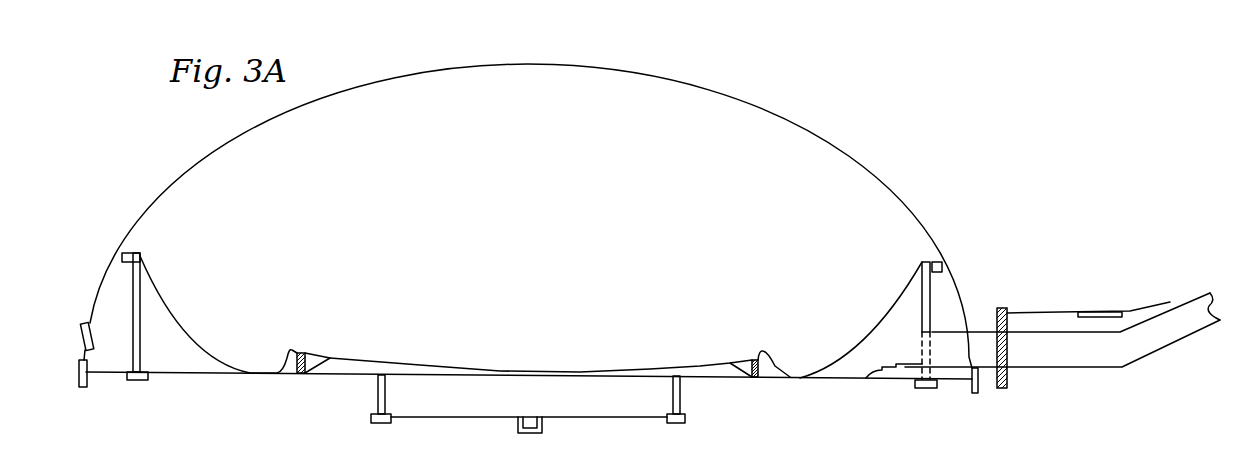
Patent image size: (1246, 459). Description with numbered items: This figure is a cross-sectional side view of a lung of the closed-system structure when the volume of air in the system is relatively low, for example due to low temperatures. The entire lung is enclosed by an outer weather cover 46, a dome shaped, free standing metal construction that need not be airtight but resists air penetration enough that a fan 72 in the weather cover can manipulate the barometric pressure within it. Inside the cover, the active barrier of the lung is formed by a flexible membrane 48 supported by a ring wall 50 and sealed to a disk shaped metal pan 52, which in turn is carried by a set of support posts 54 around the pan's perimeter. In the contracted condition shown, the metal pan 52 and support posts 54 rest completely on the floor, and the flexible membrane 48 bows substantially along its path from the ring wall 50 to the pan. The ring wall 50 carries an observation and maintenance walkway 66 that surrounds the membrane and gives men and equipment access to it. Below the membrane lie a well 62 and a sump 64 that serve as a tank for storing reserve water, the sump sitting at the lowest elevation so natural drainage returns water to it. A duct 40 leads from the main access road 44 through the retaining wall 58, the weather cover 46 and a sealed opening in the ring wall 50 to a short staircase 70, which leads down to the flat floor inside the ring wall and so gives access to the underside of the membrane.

The duct 40 is at (1092, 367).
The main access road 44 is at (1097, 312).
The outer weather cover 46 is at (190, 165).
The flexible membrane 48 is at (197, 330).
The ring wall 50 is at (133, 307).
The metal pan 52 is at (427, 333).
The support posts 54 is at (288, 373).
The retaining wall 58 is at (1008, 308).
The well 62 is at (443, 414).
The sump 64 is at (531, 412).
The observation and maintenance walkway 66 is at (122, 257).
The short staircase 70 is at (878, 372).
The fan 72 is at (79, 341).